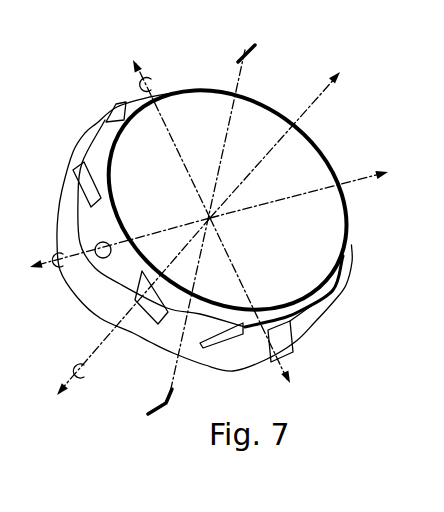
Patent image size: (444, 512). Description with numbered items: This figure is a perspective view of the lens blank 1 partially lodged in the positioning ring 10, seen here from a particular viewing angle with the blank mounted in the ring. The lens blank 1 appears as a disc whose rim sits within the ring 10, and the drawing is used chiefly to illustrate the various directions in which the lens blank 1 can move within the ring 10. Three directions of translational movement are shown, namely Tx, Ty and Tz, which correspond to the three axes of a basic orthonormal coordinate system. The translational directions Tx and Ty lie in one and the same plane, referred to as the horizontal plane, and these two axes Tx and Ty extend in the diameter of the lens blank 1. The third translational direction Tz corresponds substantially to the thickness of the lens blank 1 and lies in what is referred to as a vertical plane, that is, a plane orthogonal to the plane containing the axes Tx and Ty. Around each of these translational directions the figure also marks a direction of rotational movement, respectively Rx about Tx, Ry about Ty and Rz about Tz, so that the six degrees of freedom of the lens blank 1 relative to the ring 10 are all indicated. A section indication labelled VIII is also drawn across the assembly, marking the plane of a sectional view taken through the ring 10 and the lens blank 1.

The lens blank 1 is at (327, 229).
The positioning ring 10 is at (320, 311).
The translational direction Tx is at (308, 188).
The translational direction Ty is at (262, 310).
The translational direction Tz is at (284, 135).
The rotational direction Rx is at (109, 243).
The rotational direction Ry is at (171, 131).
The rotational direction Rz is at (133, 319).
The section line VIII- VIII is at (238, 36).